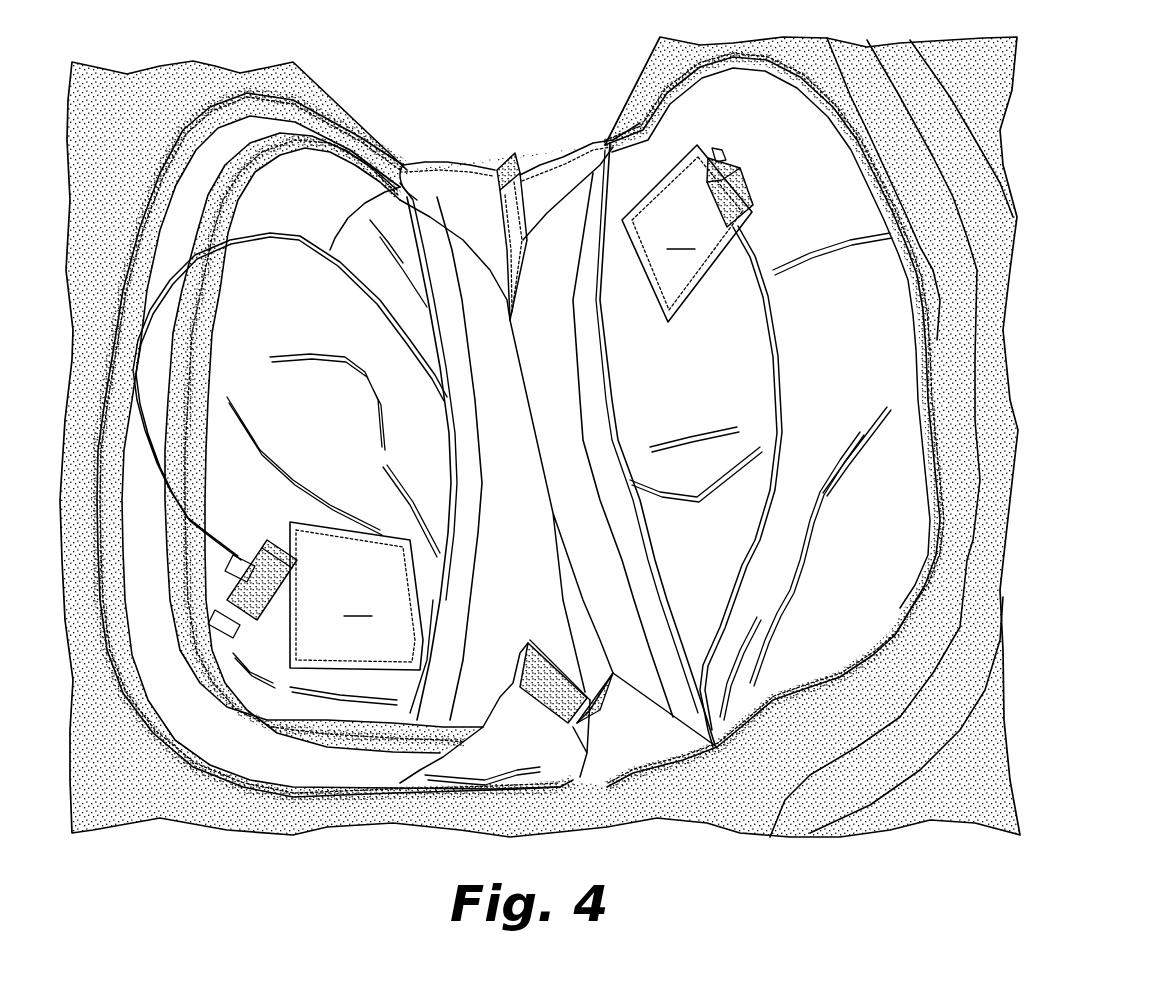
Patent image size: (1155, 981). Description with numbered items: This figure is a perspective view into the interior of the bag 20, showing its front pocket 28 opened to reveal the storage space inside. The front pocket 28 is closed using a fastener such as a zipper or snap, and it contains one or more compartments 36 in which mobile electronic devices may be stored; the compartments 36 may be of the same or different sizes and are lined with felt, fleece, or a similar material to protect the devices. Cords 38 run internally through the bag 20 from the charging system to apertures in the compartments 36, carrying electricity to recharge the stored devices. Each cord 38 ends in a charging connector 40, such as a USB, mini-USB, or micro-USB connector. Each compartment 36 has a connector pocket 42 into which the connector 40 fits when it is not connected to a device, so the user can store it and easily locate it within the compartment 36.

The bag 20 is at (1031, 374).
The front pocket 28 is at (873, 297).
The compartments 36 is at (513, 155).
The cords 38 is at (417, 166).
The charging connectors 40 is at (260, 547).
The connector pocket 42 is at (521, 407).